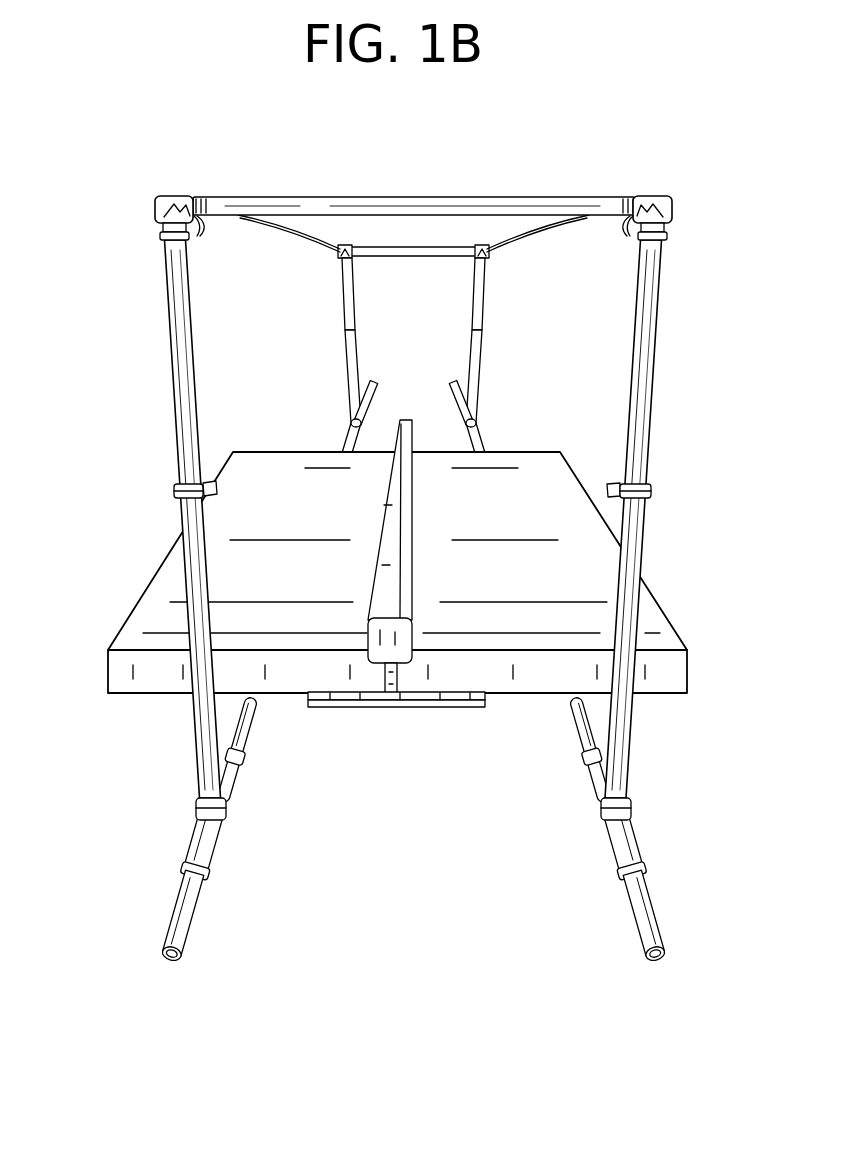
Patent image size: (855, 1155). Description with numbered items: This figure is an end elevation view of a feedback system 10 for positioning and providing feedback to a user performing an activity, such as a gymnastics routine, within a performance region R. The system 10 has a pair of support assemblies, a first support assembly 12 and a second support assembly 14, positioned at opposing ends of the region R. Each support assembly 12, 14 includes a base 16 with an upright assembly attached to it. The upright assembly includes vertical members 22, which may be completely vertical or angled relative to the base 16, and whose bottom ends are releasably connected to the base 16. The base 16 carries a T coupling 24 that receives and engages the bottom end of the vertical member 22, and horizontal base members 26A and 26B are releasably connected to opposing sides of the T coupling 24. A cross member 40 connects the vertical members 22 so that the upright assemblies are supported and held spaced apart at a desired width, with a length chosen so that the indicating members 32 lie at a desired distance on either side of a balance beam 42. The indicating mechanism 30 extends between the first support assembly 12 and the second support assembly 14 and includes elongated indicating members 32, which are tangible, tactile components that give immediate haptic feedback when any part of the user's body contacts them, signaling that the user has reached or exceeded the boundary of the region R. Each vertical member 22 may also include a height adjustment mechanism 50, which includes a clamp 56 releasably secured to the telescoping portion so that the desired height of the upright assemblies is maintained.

The feedback system 10 is at (118, 228).
The first support assembly 12 is at (150, 492).
The second support assembly 14 is at (490, 346).
The base 16 is at (660, 886).
The vertical member 22 is at (172, 418).
The T coupling 24 is at (598, 812).
The horizontal base member 26A is at (196, 897).
The horizontal base member 26B is at (248, 743).
The indicating mechanism 30 is at (697, 219).
The elongated indicating member 32 is at (293, 232).
The cross member 40 is at (388, 197).
The balance beam 42 is at (393, 506).
The height adjustment mechanism 50 is at (678, 497).
The clamp 56 is at (616, 485).
The region R is at (588, 343).